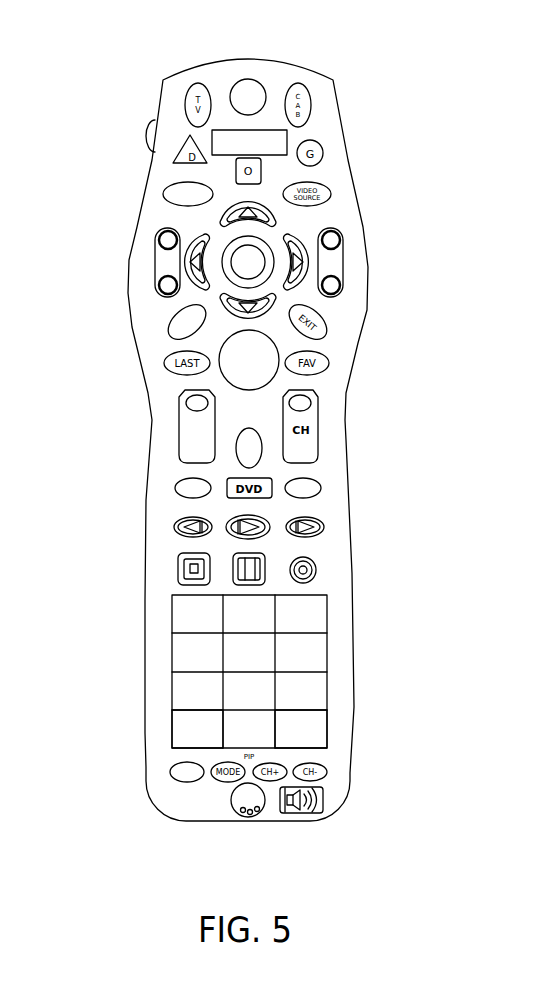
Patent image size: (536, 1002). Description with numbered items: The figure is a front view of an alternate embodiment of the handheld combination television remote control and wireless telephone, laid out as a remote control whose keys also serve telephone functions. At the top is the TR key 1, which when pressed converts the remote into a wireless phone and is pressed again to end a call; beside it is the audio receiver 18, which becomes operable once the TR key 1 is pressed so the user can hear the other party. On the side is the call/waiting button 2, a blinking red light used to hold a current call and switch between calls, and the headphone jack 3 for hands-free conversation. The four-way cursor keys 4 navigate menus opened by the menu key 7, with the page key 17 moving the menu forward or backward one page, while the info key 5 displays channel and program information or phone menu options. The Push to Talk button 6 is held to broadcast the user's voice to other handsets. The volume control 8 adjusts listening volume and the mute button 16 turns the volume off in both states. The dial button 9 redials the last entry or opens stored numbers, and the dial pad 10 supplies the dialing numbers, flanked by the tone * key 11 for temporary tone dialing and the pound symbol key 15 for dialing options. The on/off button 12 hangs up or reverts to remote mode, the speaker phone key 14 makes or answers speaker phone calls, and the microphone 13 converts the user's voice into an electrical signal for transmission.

The TR key 1 is at (237, 82).
The call/waiting button 2 is at (145, 133).
The headphone jack 3 is at (142, 196).
The 4-way cursor keys 4 is at (197, 243).
The info key 5 is at (167, 308).
The Push to Talk button 6 is at (137, 345).
The menu key 7 is at (220, 375).
The volume control 8 is at (178, 433).
The dial button 9 is at (175, 490).
The dial pad 10 is at (172, 652).
The tone * key 11 is at (172, 729).
The on/off button 12 is at (168, 773).
The microphone 13 is at (233, 807).
The speaker phone key 14 is at (323, 802).
The pound symbol key 15 is at (327, 730).
The mute button 16 is at (262, 458).
The page key 17 is at (343, 265).
The receiver 18 is at (287, 135).